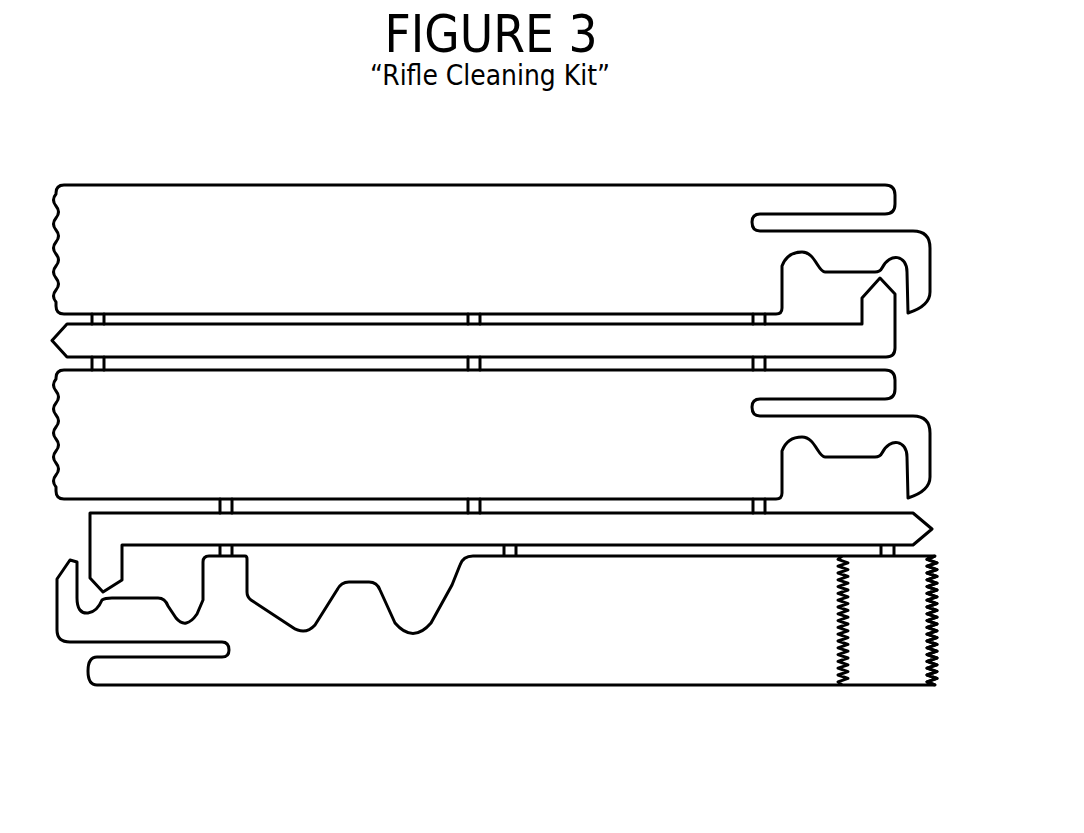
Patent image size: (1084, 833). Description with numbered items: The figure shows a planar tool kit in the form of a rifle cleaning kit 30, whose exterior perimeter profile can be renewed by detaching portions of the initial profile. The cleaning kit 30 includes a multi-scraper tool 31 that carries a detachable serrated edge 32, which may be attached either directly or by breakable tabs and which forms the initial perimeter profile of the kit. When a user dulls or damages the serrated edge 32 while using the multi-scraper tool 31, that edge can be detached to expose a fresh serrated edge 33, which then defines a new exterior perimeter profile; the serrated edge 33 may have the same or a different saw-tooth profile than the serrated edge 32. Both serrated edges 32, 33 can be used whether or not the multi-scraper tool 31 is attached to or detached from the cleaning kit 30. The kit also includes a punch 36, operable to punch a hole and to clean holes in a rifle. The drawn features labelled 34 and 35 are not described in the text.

The rifle cleaning kit 30 is at (862, 92).
The multi-scraper tool 31 is at (516, 674).
The detachable serrated edge 32 is at (914, 658).
The serrated edge 33 is at (825, 658).
The rod coupling pin 34 is at (218, 576).
The contoured grip recess 35 is at (314, 581).
The punch 36 is at (455, 547).